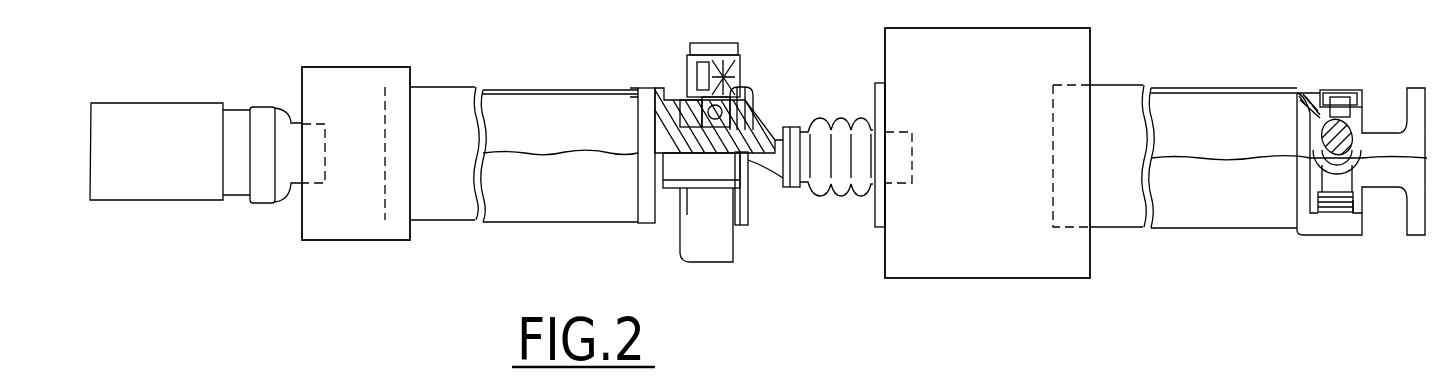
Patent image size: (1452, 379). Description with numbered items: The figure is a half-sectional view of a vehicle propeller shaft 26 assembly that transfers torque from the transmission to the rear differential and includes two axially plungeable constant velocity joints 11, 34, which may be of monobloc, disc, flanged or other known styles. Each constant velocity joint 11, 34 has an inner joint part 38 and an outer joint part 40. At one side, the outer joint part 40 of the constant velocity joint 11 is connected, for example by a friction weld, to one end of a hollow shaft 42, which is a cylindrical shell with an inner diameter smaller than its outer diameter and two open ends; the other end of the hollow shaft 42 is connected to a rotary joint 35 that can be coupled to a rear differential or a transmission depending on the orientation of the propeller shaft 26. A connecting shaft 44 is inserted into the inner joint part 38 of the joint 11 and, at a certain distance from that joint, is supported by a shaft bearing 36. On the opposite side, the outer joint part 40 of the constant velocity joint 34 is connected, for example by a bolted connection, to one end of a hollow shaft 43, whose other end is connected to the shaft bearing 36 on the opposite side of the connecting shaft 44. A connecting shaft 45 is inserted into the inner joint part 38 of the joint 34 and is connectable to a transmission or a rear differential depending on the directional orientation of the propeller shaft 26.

The constant velocity joint 11 is at (1092, 32).
The propeller shaft 26 is at (641, 140).
The constant velocity joint 34 is at (354, 66).
The rotary joint 35 is at (1332, 253).
The shaft bearing 36 is at (739, 45).
The inner joint part 38 is at (326, 124).
The outer joint part 40 is at (383, 150).
The hollow shaft 42 is at (1231, 90).
The hollow shaft 43 is at (534, 90).
The connecting shaft 44 is at (771, 126).
The connecting shaft 45 is at (265, 105).